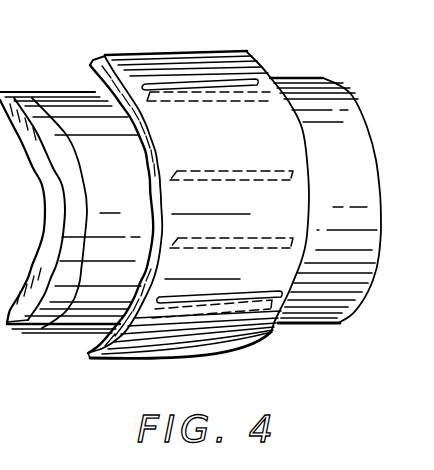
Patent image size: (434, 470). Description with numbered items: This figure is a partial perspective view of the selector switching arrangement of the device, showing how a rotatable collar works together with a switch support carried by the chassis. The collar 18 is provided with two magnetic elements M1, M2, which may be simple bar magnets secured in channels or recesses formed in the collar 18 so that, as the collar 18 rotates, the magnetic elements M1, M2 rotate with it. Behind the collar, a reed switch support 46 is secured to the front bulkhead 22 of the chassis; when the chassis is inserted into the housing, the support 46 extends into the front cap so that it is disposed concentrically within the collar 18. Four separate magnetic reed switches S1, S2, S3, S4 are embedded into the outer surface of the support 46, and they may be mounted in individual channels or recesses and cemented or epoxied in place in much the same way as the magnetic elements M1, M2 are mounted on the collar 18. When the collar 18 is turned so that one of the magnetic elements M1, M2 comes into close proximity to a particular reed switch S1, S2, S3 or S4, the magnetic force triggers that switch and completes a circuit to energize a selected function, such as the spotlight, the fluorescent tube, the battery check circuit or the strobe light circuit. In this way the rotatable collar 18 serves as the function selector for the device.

The collar 18 is at (177, 54).
The front bulkhead 22 is at (33, 331).
The reed switch support 46 is at (66, 93).
The magnetic element M1 is at (250, 290).
The magnetic element M2 is at (256, 80).
The magnetic reed switch S1 is at (233, 98).
The magnetic reed switch S2 is at (212, 173).
The magnetic reed switch S3 is at (259, 243).
The magnetic reed switch S4 is at (268, 313).